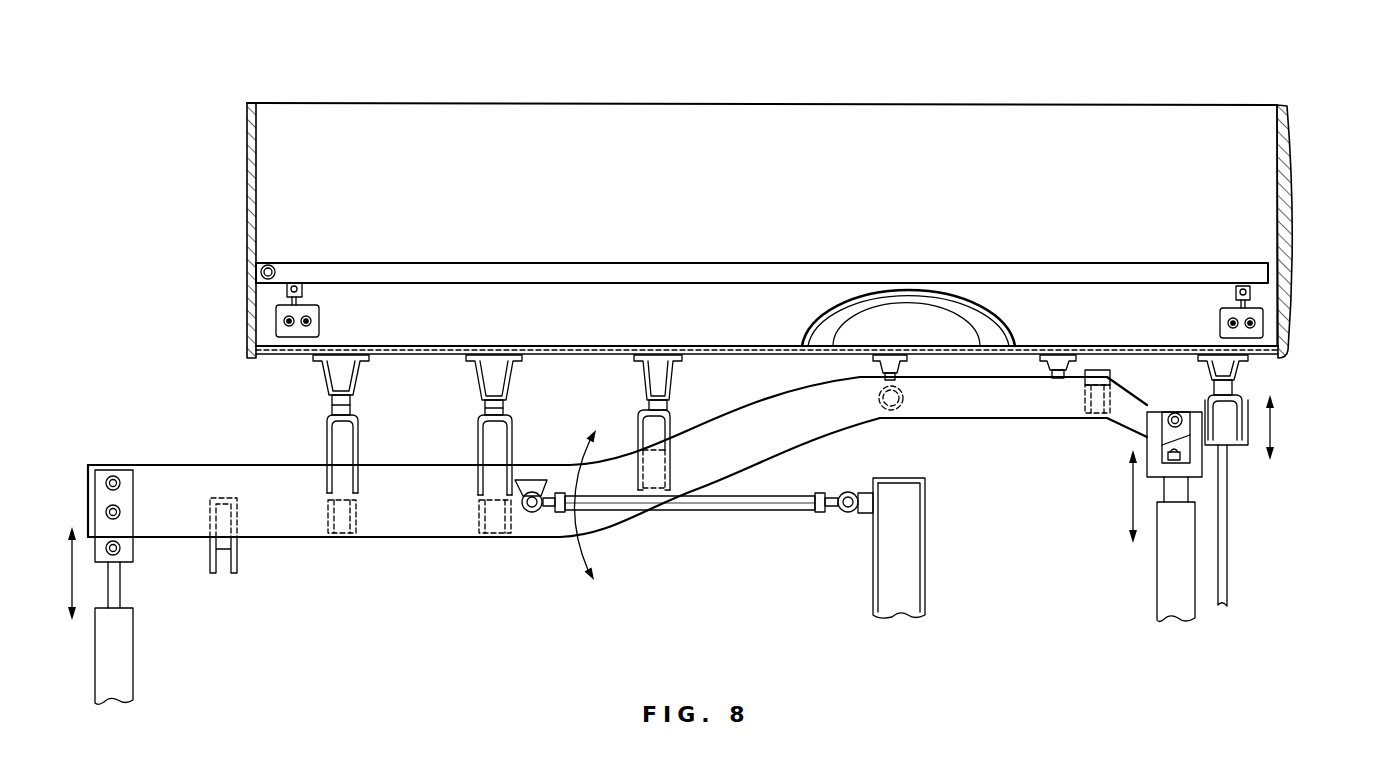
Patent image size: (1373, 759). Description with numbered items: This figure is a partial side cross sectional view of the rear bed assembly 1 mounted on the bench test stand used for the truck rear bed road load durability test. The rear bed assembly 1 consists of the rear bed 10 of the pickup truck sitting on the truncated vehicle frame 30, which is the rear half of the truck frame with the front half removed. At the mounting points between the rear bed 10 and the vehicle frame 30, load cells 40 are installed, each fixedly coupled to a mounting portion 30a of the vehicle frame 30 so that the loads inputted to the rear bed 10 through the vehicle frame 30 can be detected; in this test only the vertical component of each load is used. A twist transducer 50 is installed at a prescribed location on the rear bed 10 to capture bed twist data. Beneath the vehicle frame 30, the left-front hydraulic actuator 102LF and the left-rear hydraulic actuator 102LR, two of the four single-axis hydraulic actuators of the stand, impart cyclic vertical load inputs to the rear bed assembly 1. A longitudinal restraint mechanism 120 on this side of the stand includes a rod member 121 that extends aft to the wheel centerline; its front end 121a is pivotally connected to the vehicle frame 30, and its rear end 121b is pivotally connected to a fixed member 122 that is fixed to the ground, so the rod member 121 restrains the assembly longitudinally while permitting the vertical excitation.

The rear bed assembly 1 is at (1231, 81).
The rear bed 10 is at (1295, 213).
The twist transducer 50 is at (704, 260).
The load cell 40 is at (332, 405).
The vehicle frame 30 is at (275, 513).
The mounting portion of the vehicle frame 30a is at (325, 448).
The left-front hydraulic actuator 102LF is at (146, 658).
The left-rear hydraulic actuator 102LR is at (1145, 583).
The longitudinal restraint mechanism 120 is at (763, 542).
The rod member 121 is at (692, 522).
The front end of the rod member 121a is at (538, 512).
The rear end of the rod member 121b is at (856, 492).
The fixed member 122 is at (900, 560).